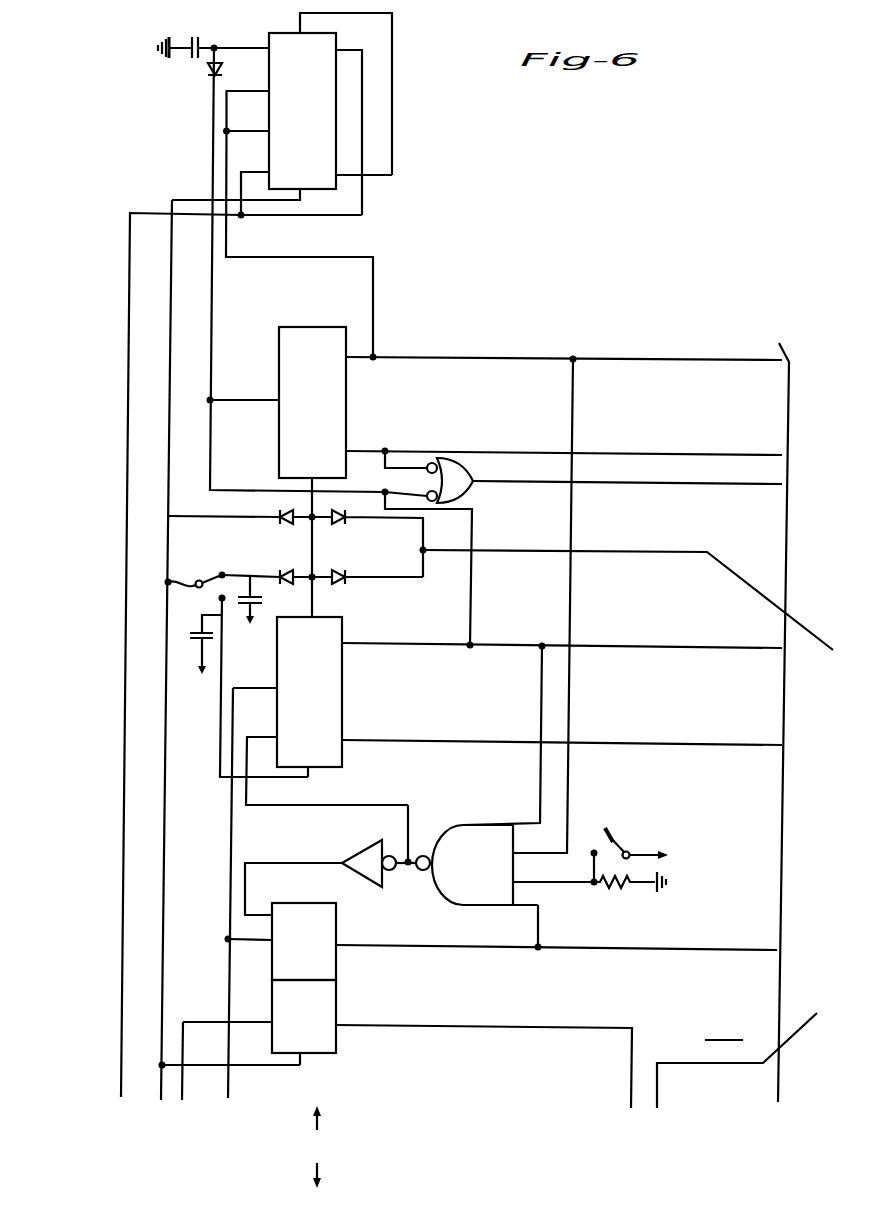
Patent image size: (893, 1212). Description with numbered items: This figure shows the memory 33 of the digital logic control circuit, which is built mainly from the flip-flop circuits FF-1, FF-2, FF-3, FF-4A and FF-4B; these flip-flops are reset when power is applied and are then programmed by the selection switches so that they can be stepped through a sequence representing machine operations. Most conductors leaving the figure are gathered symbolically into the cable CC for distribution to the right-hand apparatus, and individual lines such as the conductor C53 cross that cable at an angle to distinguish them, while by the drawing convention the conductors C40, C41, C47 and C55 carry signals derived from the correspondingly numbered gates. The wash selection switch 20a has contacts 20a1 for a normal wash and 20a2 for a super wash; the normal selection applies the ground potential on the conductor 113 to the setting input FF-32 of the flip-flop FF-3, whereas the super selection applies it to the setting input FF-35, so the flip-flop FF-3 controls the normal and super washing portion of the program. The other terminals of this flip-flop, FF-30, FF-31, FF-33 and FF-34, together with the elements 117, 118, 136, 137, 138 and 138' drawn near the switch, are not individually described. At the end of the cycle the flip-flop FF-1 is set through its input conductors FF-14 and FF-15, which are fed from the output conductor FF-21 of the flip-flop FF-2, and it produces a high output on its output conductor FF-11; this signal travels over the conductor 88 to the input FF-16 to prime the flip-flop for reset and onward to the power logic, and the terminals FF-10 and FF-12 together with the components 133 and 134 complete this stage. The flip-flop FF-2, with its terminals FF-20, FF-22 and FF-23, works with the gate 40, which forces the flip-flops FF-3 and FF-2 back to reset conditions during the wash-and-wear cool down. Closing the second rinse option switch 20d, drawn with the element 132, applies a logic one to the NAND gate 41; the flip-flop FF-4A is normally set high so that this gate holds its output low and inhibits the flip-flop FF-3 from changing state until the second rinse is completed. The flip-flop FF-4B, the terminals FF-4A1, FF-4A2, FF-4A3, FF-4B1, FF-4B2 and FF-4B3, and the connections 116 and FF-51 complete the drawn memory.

The conductor 88 is at (337, 217).
The capacitor 133 is at (192, 36).
The diode 134 is at (207, 68).
The flip-flop FF-1 is at (302, 111).
The flip-flop FF-1 output line FF-10 is at (375, 175).
The output conductor FF-11 is at (354, 50).
The flip-flop FF-1 input line FF-12 is at (300, 23).
The input conductor FF-14 is at (240, 92).
The input conductor FF-15 is at (243, 131).
The flip-flop input FF-16 is at (250, 172).
The flip-flop FF-2 is at (312, 402).
The flip-flop FF-2 output line FF-20 is at (360, 450).
The output conductor FF-21 is at (377, 356).
The flip-flop FF-2 input line FF-22 is at (253, 392).
The flip-flop FF-2 input line FF-23 is at (303, 488).
The gate 40 is at (462, 480).
The control conductor C40 is at (627, 480).
The diode 118 is at (283, 512).
The diode 138' is at (377, 543).
The diode 136 is at (345, 572).
The diode 117 is at (285, 572).
The capacitor 137 is at (258, 597).
The capacitor 138 is at (222, 657).
The control conductor C53 is at (810, 607).
The conductor 113 is at (161, 1082).
The selection switch 20a is at (168, 582).
The contact 20a1 is at (223, 574).
The contact 20a2 is at (219, 599).
The flip-flop FF-3 is at (309, 692).
The flip-flop FF-3 output line FF-30 is at (562, 736).
The flip-flop FF-3 output line FF-31 is at (348, 643).
The setting input FF-32 is at (313, 598).
The flip-flop FF-3 input line FF-33 is at (243, 690).
The flip-flop FF-3 output line FF-34 is at (260, 738).
The setting input FF-35 is at (310, 773).
The flip-flop FF-5 input line FF-51 is at (228, 1088).
The control conductor C41 is at (407, 822).
The NAND gate 41 is at (496, 859).
The second rinse option switch 20d is at (582, 863).
The resistor 132 is at (589, 895).
The flip-flop FF-4A is at (304, 941).
The flip-flop FF-4B is at (304, 1016).
The flip-flop FF-4A output line FF-4A1 is at (338, 944).
The flip-flop FF-4A input line FF-4A2 is at (248, 915).
The flip-flop FF-4A input line FF-4A3 is at (240, 942).
The flip-flop FF-4B output line FF-4B1 is at (338, 1022).
The flip-flop FF-4B input line FF-4B2 is at (242, 1022).
The flip-flop FF-4B input line FF-4B3 is at (305, 1064).
The control conductor C47 is at (182, 1083).
The conductor line 116 is at (251, 1070).
The control conductor C55 is at (737, 1060).
The cable CC is at (786, 910).
The memory 33 is at (313, 1147).